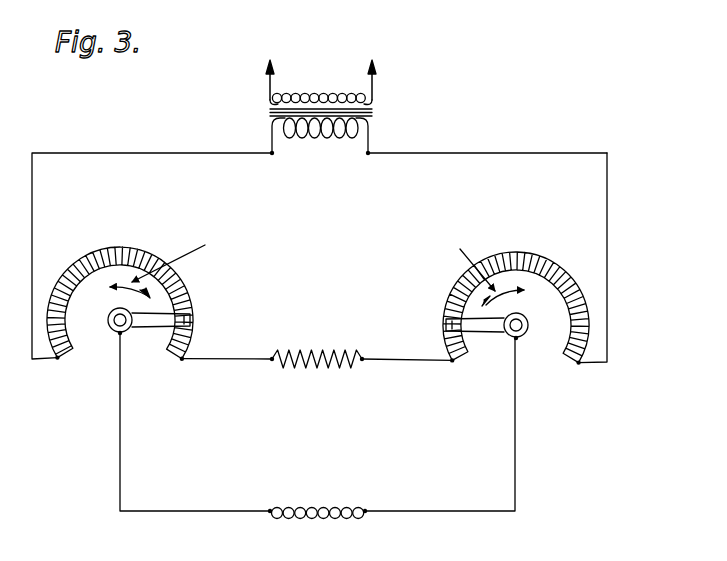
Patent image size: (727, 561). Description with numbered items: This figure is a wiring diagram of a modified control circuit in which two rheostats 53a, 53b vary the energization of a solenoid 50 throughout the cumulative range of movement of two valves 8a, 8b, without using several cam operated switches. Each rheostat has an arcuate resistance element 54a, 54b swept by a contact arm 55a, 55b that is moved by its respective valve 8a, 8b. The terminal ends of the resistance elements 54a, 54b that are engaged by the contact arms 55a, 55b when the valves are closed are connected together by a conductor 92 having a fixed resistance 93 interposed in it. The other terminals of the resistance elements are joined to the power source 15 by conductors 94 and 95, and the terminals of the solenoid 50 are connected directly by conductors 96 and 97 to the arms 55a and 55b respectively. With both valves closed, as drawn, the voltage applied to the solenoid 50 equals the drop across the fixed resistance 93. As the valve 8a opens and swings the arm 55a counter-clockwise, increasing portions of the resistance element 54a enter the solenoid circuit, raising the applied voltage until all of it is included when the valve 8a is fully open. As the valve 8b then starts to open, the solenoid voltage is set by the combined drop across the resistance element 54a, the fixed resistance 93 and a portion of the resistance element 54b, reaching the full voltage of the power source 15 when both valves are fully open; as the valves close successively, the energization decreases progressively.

The power source 15 is at (378, 115).
The conductor 94 is at (102, 153).
The conductor 95 is at (607, 190).
The conductor 92 is at (398, 361).
The fixed resistance 93 is at (333, 336).
The conductor 96 is at (120, 455).
The conductor 97 is at (515, 466).
The solenoid 50 is at (340, 479).
The rheostat 53a is at (120, 291).
The resistance element 54a is at (105, 250).
The contact arm 55a is at (148, 328).
The valve 8a is at (206, 263).
The rheostat 53b is at (519, 323).
The resistance element 54b is at (592, 250).
The contact arm 55b is at (486, 333).
The valve 8b is at (462, 267).